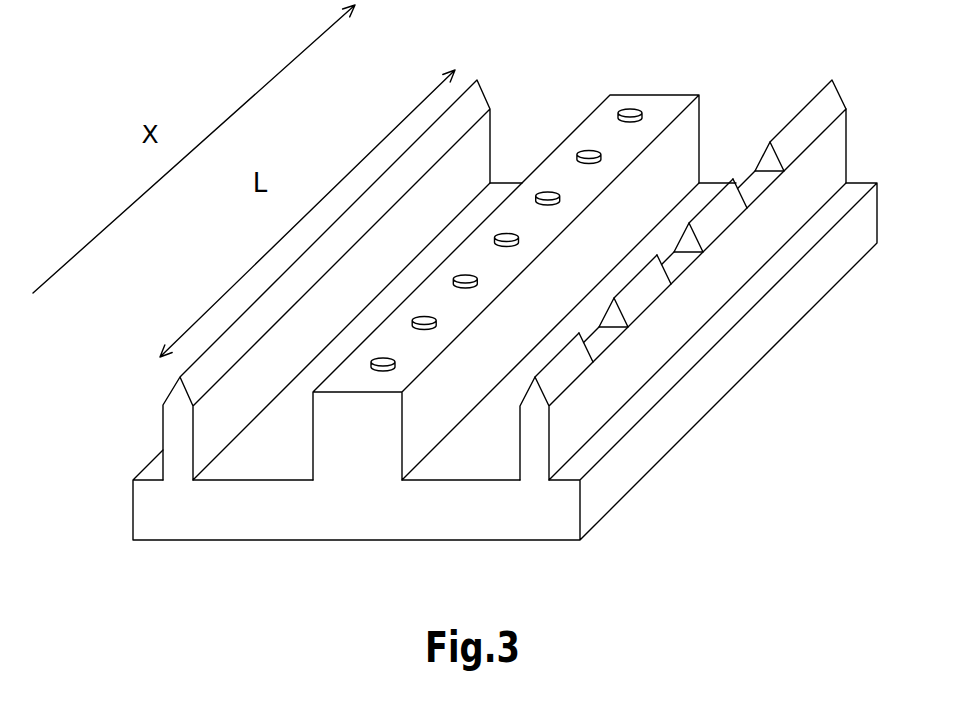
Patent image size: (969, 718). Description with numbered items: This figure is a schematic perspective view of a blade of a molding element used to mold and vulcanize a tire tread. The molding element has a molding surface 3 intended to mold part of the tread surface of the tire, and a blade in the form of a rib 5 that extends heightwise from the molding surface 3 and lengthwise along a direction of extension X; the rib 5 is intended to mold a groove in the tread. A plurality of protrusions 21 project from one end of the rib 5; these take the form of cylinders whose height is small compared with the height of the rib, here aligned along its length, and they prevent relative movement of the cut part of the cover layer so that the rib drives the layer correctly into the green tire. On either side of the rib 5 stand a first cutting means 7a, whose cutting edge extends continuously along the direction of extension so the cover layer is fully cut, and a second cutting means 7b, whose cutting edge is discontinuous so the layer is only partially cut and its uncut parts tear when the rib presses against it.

The molding surface 3 is at (515, 484).
The rib 5 is at (365, 452).
The first cutting means 7a is at (165, 453).
The second cutting means 7b is at (525, 448).
The protrusions 21 is at (650, 105).